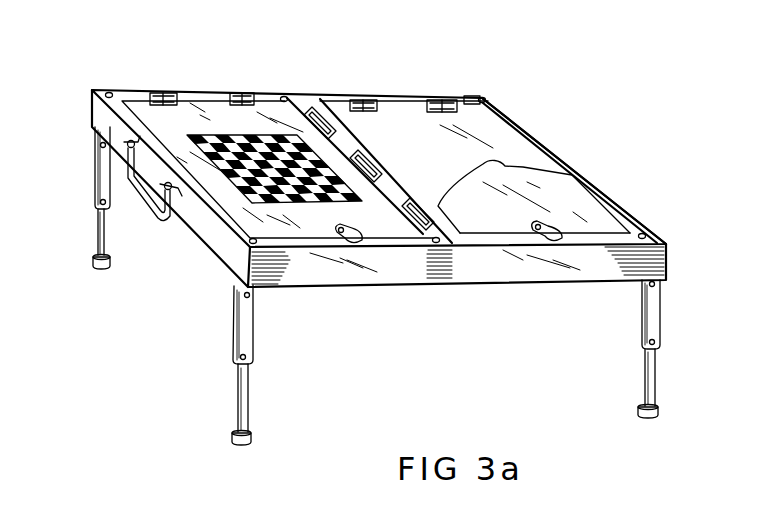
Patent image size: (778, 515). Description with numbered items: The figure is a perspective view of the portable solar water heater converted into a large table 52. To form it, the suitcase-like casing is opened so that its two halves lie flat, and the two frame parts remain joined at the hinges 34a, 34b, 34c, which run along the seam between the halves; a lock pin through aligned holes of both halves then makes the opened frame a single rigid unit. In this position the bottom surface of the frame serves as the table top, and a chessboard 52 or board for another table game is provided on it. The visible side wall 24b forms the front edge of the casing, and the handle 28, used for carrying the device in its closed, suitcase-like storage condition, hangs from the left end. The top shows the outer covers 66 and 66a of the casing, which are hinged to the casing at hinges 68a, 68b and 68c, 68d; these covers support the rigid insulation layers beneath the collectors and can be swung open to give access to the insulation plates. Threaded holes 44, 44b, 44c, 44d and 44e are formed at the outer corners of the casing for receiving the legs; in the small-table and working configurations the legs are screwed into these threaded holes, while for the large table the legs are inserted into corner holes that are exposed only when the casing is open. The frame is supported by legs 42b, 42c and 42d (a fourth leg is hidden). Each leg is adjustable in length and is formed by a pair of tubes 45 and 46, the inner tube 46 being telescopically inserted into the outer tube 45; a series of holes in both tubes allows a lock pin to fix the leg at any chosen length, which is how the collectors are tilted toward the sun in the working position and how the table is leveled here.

The side wall 24b is at (217, 240).
The handle 28 is at (143, 188).
The hinge 34a is at (316, 110).
The hinge 34b is at (453, 100).
The hinge 34c is at (590, 173).
The leg 42b is at (647, 328).
The leg 42c is at (100, 176).
The leg 42d is at (253, 365).
The threaded hole 44 is at (107, 91).
The threaded hole 44b is at (285, 96).
The threaded hole 44c is at (434, 243).
The threaded hole 44d is at (645, 235).
The threaded hole 44e is at (490, 102).
The tube 45 is at (252, 325).
The tube 46 is at (249, 393).
The large table 52 is at (247, 147).
The outer cover 66 is at (217, 110).
The outer cover 66a is at (510, 152).
The hinge 68a is at (157, 95).
The hinge 68b is at (240, 96).
The hinge 68c is at (375, 157).
The hinge 68d is at (472, 96).